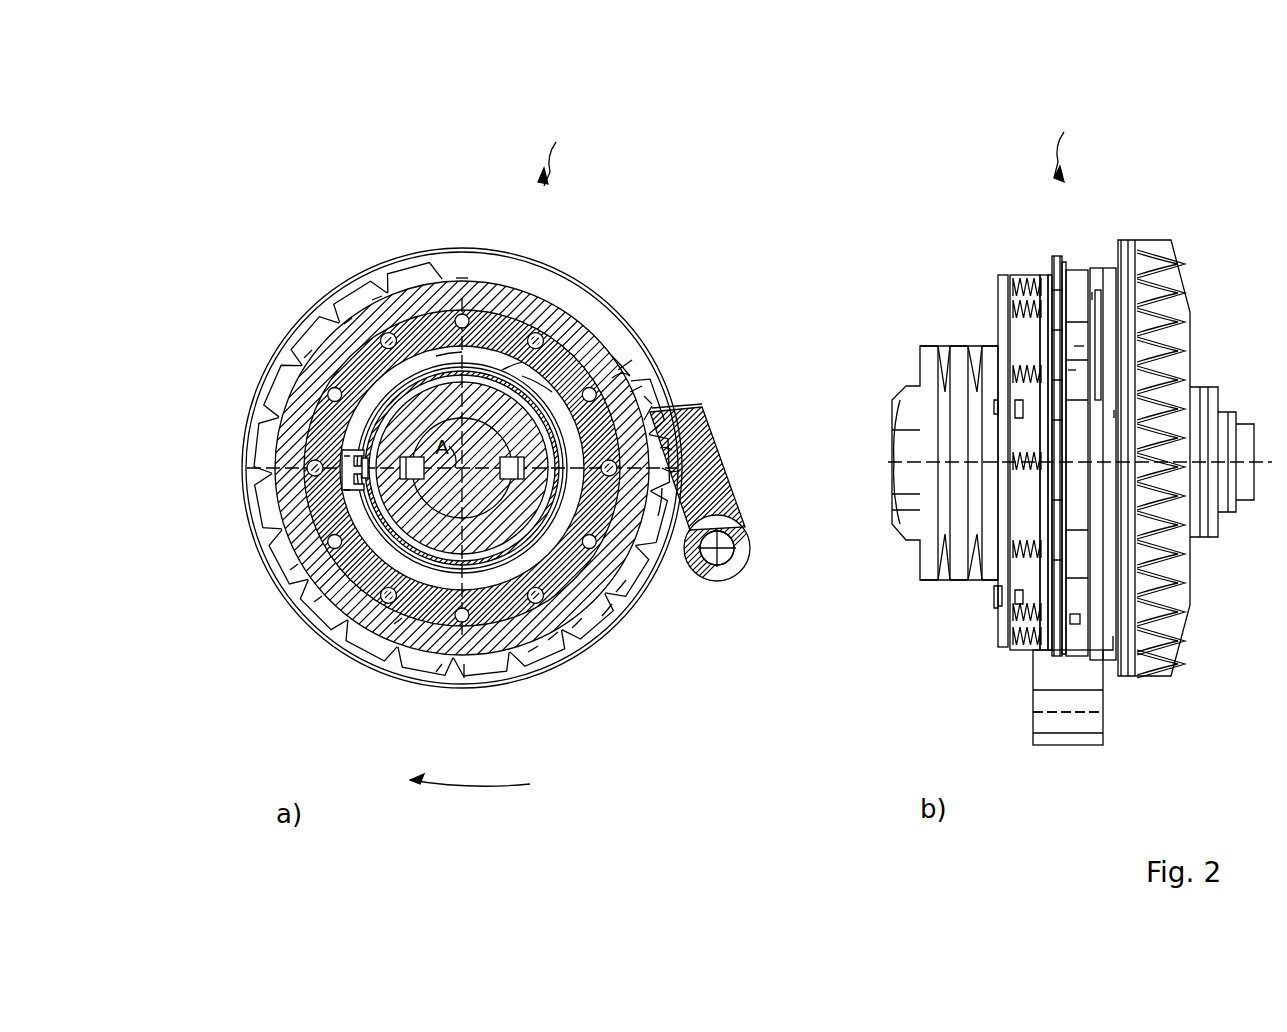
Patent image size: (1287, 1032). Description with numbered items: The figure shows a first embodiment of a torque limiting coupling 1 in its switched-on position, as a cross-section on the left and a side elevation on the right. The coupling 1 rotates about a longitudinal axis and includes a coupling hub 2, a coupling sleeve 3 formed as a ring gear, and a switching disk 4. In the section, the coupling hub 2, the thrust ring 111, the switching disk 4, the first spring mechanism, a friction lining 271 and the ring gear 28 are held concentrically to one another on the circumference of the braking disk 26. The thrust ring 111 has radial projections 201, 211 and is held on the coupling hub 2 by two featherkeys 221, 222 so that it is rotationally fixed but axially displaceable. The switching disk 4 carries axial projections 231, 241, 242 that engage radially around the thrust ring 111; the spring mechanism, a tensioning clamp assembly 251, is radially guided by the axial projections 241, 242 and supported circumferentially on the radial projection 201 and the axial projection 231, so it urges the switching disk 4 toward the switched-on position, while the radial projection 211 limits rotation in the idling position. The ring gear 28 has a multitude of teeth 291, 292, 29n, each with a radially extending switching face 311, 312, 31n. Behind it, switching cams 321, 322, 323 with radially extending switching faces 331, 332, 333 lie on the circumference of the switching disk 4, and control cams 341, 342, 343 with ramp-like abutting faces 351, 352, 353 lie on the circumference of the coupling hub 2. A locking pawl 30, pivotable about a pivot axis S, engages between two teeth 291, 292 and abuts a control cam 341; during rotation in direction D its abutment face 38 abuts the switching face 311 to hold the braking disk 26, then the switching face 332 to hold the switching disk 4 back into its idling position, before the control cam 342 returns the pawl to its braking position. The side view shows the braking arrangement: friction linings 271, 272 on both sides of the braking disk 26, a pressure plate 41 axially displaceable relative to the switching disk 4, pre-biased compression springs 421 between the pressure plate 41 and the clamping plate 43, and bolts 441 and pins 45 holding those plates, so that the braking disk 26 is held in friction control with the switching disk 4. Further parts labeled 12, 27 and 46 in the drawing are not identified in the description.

The torque limiting coupling 1 is at (804, 149).
The coupling hub 2 is at (643, 510).
The coupling sleeve 3 is at (739, 463).
The switching disk 4 is at (643, 510).
The belt pulley 12 is at (926, 346).
The radial projection 201 is at (282, 502).
The radial projection 211 is at (620, 656).
The featherkey 221 is at (423, 479).
The featherkey 222 is at (499, 479).
The axial projection 231 is at (279, 479).
The axial projection 241 is at (557, 321).
The axial projection 242 is at (513, 647).
The tensioning clamp assembly 251 is at (430, 291).
The braking disk 26 is at (814, 476).
The flange 27 is at (643, 510).
The friction lining 271 is at (1048, 272).
The friction lining 272 is at (1068, 270).
The ring gear 28 is at (552, 685).
The tooth 291 is at (682, 374).
The tooth 292 is at (718, 437).
The tooth 29n is at (645, 326).
The locking pawl 30 is at (254, 32).
The switching face 311 is at (860, 370).
The switching face 312 is at (720, 471).
The switching face 31n is at (658, 344).
The switching cam 321 is at (668, 596).
The switching cam 322 is at (715, 293).
The switching cam 323 is at (290, 633).
The switching face 331 is at (661, 629).
The switching face 332 is at (468, 229).
The switching face 333 is at (250, 578).
The control cam 341 is at (899, 531).
The control cam 342 is at (704, 282).
The control cam 343 is at (416, 694).
The abutting face 351 is at (682, 505).
The abutting face 352 is at (773, 339).
The abutting face 353 is at (468, 695).
The abutment face 38 is at (704, 402).
The pressure plate 41 is at (1044, 274).
The compression spring 421 is at (1024, 286).
The clamping plate 43 is at (1008, 292).
The bolt 441 is at (998, 598).
The pin 45 is at (530, 297).
The bearing ring 46 is at (643, 510).
The thrust ring 111 is at (360, 664).
The rotational direction D is at (470, 778).
The pivot axis S is at (901, 623).